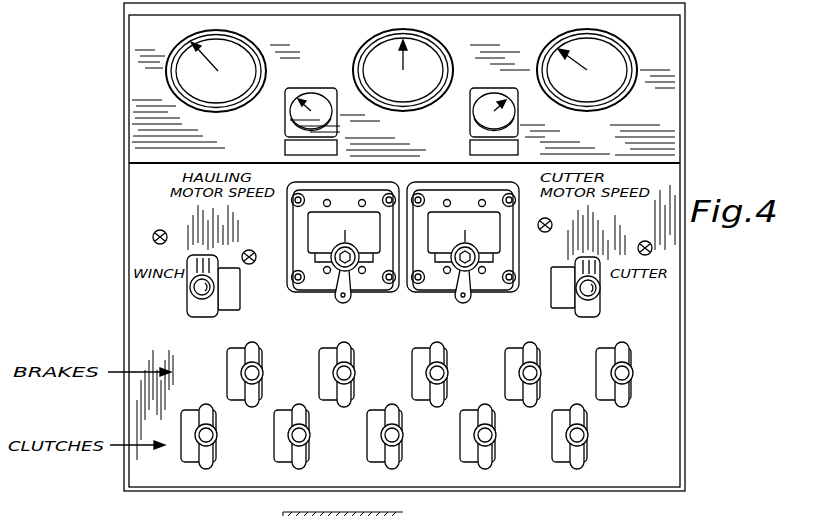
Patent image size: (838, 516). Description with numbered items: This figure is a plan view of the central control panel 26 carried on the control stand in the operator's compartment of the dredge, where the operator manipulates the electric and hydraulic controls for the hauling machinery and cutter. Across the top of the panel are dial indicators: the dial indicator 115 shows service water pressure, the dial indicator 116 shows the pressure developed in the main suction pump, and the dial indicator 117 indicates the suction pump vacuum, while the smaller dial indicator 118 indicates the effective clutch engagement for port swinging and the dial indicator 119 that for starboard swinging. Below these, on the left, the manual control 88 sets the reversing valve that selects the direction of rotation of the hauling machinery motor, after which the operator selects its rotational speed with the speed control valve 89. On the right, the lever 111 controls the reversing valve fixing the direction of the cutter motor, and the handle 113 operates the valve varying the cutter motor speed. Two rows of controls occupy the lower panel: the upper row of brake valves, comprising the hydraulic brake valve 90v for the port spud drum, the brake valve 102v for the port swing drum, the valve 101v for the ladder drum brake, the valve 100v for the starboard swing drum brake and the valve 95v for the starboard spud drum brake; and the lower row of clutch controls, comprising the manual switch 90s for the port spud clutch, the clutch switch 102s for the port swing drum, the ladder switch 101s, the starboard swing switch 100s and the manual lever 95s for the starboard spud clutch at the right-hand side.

The central control panel 26 is at (404, 247).
The manual control 88 is at (192, 288).
The speed control valve 89 is at (328, 295).
The hydraulic brake valve 90v is at (258, 360).
The manual switch 90s is at (217, 446).
The valve 95v is at (634, 383).
The manual lever 95s is at (592, 428).
The valve 100v is at (538, 348).
The starboard swing switch 100s is at (496, 447).
The valve 101v is at (446, 358).
The ladder switch 101s is at (403, 447).
The brake valve 102v is at (352, 360).
The clutch switch 102s is at (308, 448).
The lever 111 is at (602, 291).
The handle 113 is at (478, 301).
The dial indicator 115 is at (244, 62).
The dial indicator 116 is at (430, 58).
The dial indicator 117 is at (607, 57).
The dial indicator 118 is at (323, 115).
The dial indicator 119 is at (510, 116).